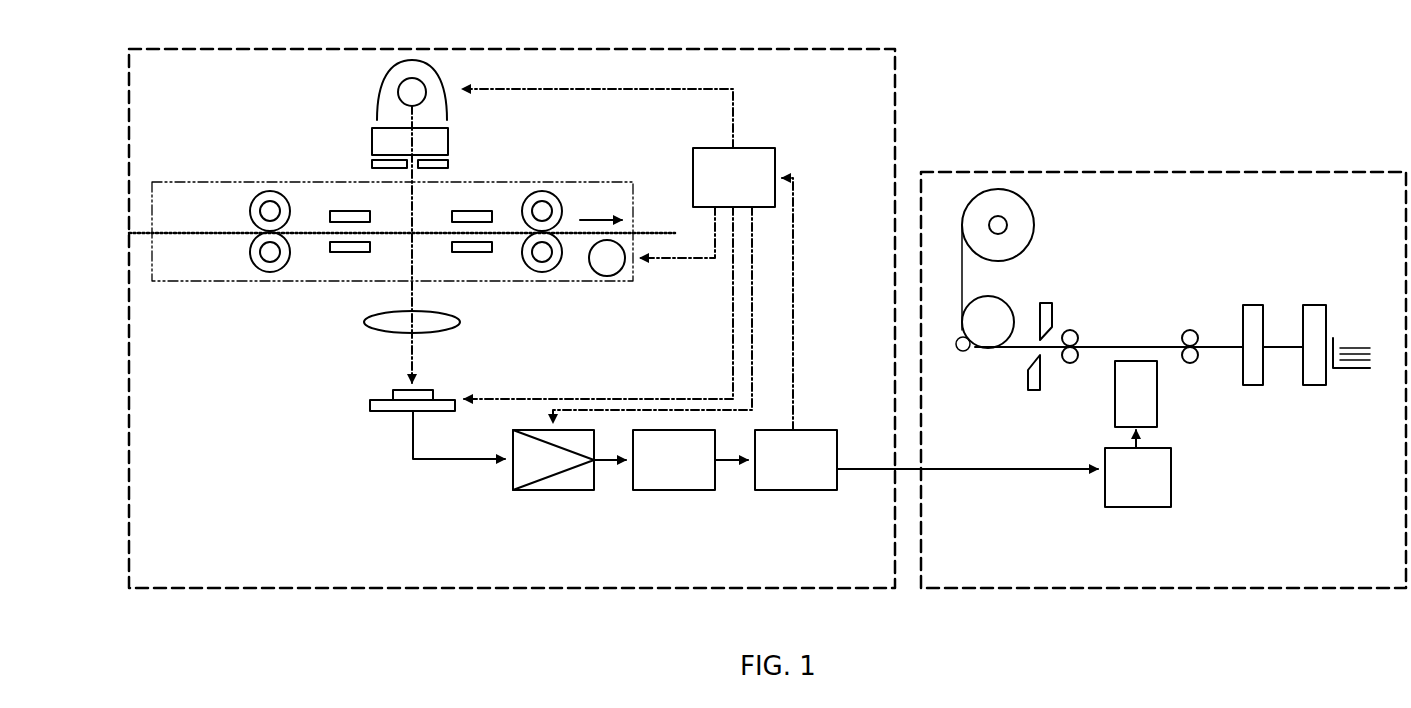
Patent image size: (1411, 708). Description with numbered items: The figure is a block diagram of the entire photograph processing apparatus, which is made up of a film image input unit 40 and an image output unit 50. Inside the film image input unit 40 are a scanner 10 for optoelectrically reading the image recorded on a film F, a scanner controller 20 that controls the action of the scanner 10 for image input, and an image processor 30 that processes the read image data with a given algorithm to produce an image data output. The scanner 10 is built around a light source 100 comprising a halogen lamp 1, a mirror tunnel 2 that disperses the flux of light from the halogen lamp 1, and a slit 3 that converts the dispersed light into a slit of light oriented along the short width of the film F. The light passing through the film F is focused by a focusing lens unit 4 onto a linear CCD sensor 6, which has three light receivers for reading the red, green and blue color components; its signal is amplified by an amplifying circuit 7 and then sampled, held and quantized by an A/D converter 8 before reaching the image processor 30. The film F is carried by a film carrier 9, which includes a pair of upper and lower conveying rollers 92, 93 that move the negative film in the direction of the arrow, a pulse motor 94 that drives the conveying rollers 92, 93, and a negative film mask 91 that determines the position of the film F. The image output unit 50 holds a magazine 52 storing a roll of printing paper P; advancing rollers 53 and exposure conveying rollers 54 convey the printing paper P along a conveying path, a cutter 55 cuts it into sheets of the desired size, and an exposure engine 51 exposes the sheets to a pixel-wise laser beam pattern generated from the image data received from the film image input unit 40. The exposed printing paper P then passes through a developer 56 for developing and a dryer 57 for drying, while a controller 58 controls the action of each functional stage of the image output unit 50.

The halogen lamp 1 is at (395, 88).
The mirror tunnel 2 is at (449, 140).
The slit 3 is at (449, 163).
The focusing lens unit 4 is at (460, 322).
The linear CCD sensor 6 is at (393, 407).
The amplifying circuit 7 is at (553, 460).
The A/D converter 8 is at (674, 460).
The film carrier 9 is at (192, 296).
The scanner 10 is at (280, 407).
The scanner controller 20 is at (734, 177).
The image processor 30 is at (796, 460).
The film image input unit 40 is at (895, 110).
The image output unit 50 is at (1137, 172).
The exposure engine 51 is at (1162, 400).
The magazine 52 is at (1034, 235).
The advancing rollers 53 is at (1005, 296).
The exposure conveying rollers 54 is at (1078, 332).
The cutter 55 is at (1026, 376).
The developer 56 is at (1253, 305).
The dryer 57 is at (1314, 305).
The controller 58 is at (1138, 477).
The negative film mask 91 is at (335, 211).
The upper conveying roller 92 is at (276, 191).
The lower conveying roller 93 is at (258, 268).
The pulse motor 94 is at (622, 264).
The light source 100 is at (470, 115).
The film F is at (226, 230).
The printing paper P is at (962, 282).